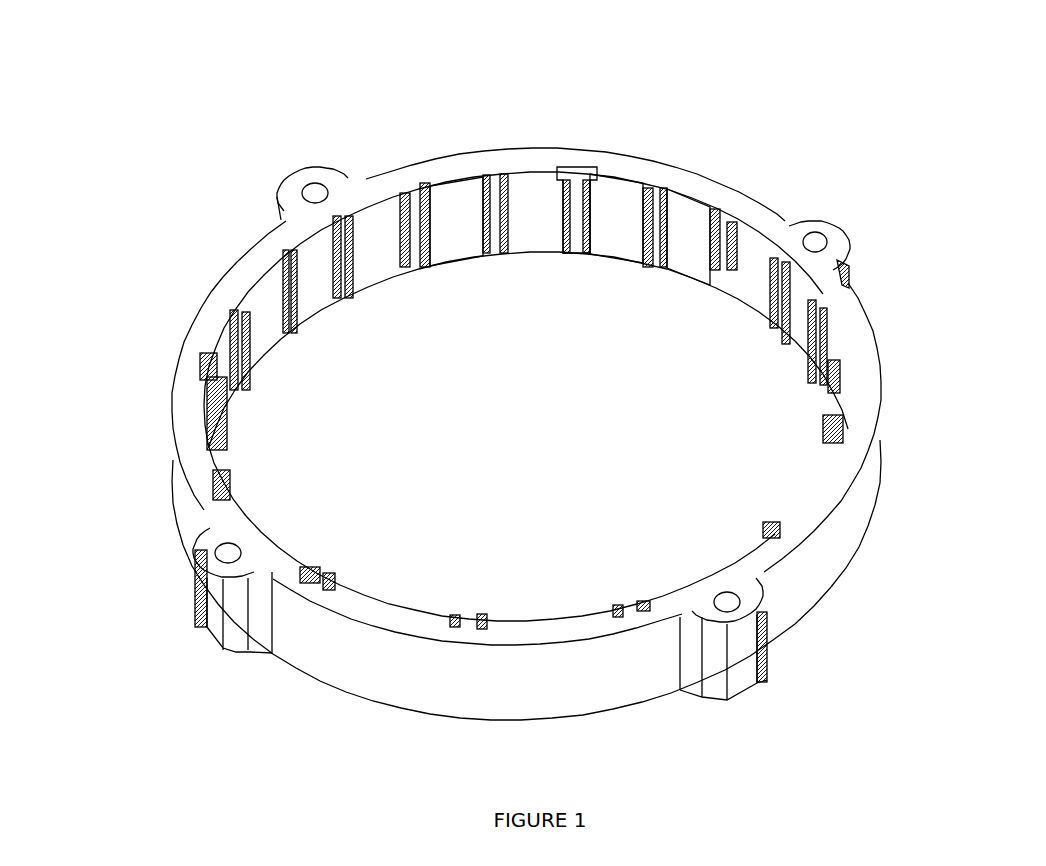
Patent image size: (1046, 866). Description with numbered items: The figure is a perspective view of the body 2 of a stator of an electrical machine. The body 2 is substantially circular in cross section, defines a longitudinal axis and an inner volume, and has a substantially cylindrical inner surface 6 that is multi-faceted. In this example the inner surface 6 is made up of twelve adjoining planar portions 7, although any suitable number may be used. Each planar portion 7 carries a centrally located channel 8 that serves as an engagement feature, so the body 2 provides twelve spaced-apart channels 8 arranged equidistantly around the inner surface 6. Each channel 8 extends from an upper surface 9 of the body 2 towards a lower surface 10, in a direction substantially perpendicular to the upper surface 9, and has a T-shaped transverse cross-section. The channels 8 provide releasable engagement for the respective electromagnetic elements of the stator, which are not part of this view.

The body of the stator 2 is at (253, 197).
The inner surface 6 is at (457, 213).
The planar portions 7 is at (687, 233).
The channel 8 is at (577, 185).
The upper surface 9 is at (183, 422).
The lower surface 10 is at (830, 590).